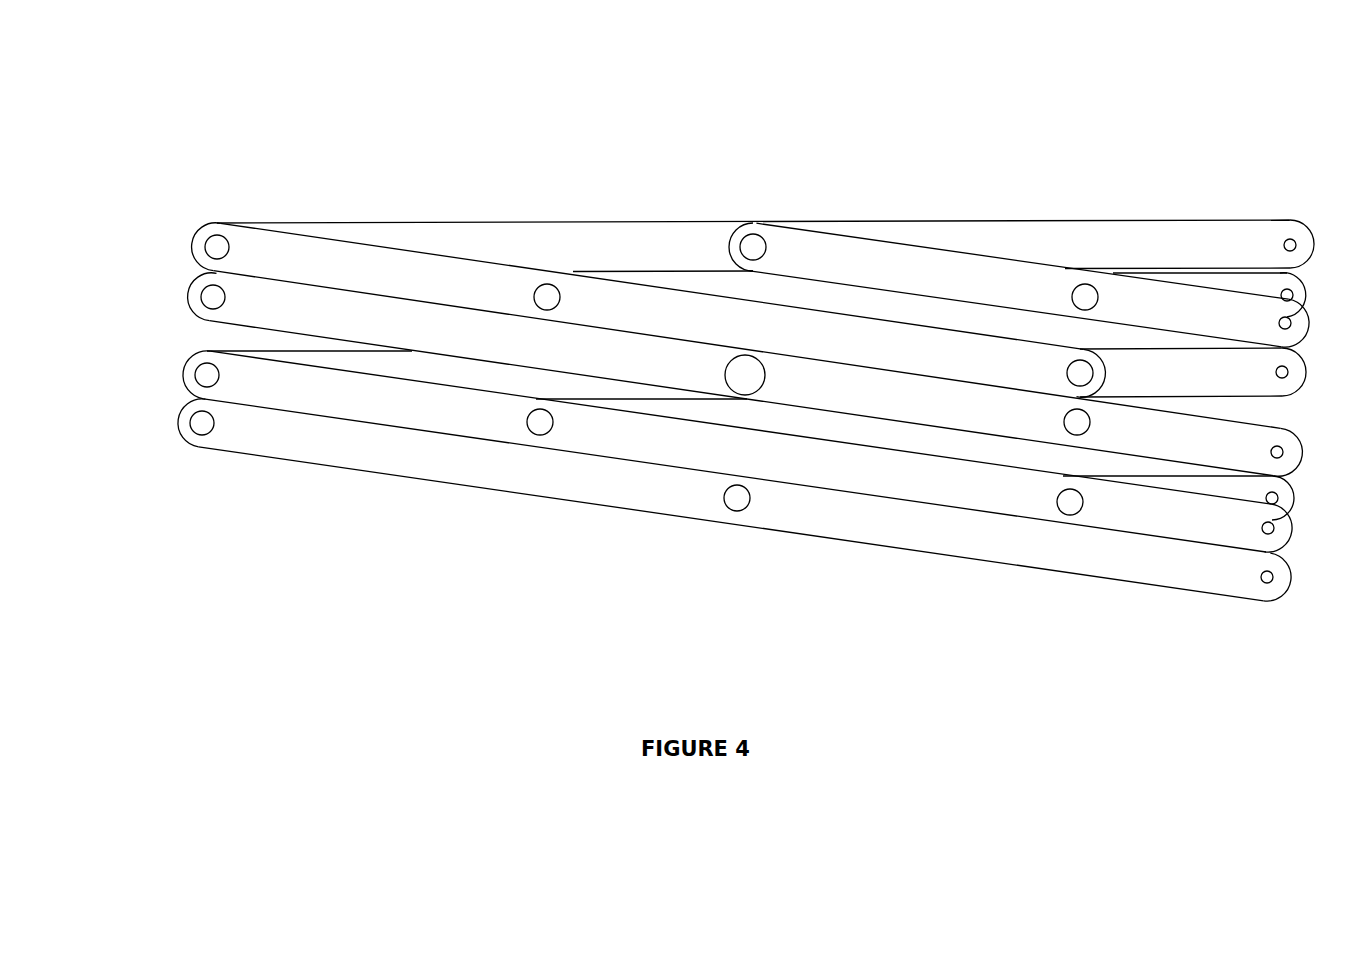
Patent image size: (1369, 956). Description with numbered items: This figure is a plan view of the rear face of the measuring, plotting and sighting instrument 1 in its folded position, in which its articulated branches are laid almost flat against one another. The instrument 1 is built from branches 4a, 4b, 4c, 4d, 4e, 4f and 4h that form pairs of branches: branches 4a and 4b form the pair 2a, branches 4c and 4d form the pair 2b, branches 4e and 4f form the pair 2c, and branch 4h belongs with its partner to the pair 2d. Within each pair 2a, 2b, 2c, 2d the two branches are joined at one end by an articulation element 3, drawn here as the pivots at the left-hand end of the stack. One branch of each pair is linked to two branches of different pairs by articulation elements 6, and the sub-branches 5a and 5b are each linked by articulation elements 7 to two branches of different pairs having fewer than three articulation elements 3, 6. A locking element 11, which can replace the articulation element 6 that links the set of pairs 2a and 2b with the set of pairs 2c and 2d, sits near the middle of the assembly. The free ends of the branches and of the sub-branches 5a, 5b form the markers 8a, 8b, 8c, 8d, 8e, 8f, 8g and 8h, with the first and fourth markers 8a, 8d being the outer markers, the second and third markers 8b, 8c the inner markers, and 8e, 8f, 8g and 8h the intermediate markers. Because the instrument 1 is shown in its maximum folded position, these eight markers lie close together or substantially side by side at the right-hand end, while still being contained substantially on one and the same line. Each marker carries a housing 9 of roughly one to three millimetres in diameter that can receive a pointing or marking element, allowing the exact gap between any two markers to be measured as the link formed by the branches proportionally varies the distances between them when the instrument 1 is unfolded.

The measuring and/or plotting and/or sighting instrument 1 is at (341, 108).
The pair of branches 2a is at (207, 228).
The pair of branches 2b is at (188, 304).
The pair of branches 2c is at (182, 378).
The pair of branches 2d is at (180, 440).
The articulation element 3 is at (212, 247).
The branch 4a is at (657, 252).
The branch 4b is at (632, 305).
The branch 4c is at (717, 290).
The branch 4d is at (605, 345).
The branch 4e is at (400, 360).
The branch 4f is at (340, 405).
The branch 4h is at (290, 438).
The sub-branch 5a is at (1190, 305).
The sub-branch 5b is at (1175, 485).
The articulation element 6 is at (540, 420).
The articulation element 7 is at (1088, 295).
The first marker 8a is at (1290, 242).
The second marker 8b is at (1284, 372).
The third marker 8c is at (1279, 452).
The fourth marker 8d is at (1267, 578).
The intermediate marker 8e is at (1287, 293).
The intermediate marker 8f is at (1283, 320).
The fifth marker 8g is at (1274, 498).
The sixth marker 8h is at (1268, 528).
The housing 9 is at (1292, 246).
The locking element 11 is at (744, 377).